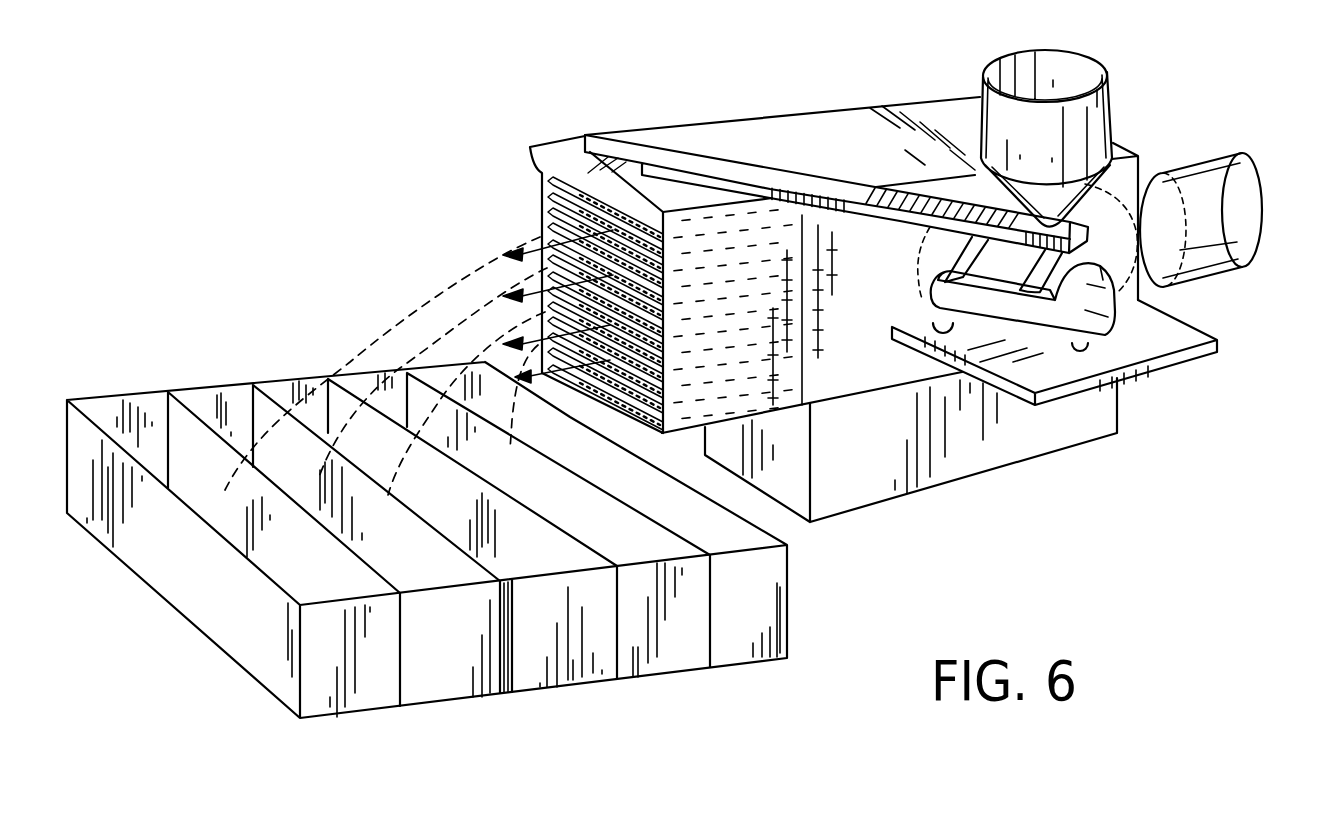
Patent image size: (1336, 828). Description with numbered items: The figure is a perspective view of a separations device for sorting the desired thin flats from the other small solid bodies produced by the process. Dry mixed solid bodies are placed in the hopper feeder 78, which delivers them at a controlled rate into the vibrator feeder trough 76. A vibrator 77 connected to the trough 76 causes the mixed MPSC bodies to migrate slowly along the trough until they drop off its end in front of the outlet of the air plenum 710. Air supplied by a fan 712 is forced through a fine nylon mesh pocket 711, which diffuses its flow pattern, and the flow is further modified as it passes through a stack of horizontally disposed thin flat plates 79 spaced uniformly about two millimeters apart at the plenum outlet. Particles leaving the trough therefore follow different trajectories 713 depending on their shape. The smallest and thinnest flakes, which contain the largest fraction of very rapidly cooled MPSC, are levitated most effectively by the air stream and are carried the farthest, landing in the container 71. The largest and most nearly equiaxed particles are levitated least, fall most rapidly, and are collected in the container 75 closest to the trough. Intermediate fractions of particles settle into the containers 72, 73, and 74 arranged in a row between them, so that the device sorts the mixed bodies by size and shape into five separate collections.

The container 71 is at (361, 693).
The container 72 is at (460, 687).
The container 73 is at (567, 677).
The container 74 is at (665, 660).
The container 75 is at (750, 648).
The vibrator feeder trough 76 is at (692, 170).
The vibrator 77 is at (1085, 310).
The hopper feeder 78 is at (1093, 110).
The stack of shelves 79 is at (565, 224).
The air plenum 710 is at (846, 124).
The fine nylon mesh pocket 711 is at (1137, 155).
The fan 712 is at (1243, 193).
The discharge trajectories 713 is at (463, 330).